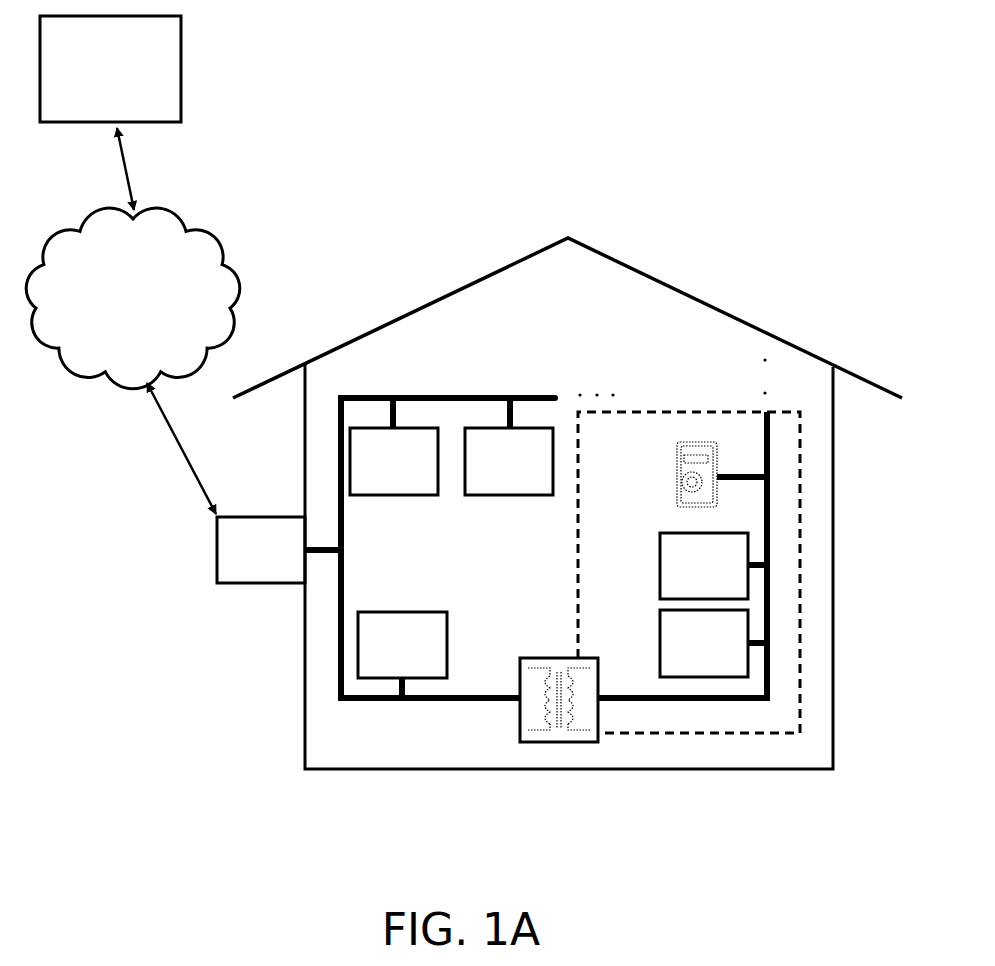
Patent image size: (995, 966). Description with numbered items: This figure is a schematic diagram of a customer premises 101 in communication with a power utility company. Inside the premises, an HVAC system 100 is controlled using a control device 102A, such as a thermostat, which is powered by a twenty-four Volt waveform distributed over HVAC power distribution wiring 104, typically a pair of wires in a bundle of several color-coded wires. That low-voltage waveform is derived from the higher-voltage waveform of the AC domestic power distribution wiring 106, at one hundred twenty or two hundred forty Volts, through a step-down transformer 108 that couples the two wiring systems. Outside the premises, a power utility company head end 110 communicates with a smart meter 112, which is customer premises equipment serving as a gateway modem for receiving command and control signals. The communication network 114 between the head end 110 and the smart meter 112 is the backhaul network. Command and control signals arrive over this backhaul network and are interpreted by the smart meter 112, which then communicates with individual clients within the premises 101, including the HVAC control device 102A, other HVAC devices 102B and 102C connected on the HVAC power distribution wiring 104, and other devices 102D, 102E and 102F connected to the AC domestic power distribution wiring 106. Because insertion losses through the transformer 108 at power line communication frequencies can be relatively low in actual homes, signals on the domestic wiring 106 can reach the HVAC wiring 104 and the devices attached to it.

The HVAC system 100 is at (800, 485).
The customer premises 101 is at (697, 300).
The control device 102A is at (683, 462).
The HVAC device 102B is at (672, 656).
The HVAC device 102C is at (672, 579).
The device 102D is at (369, 658).
The device 102E is at (362, 475).
The device 102F is at (478, 475).
The HVAC power distribution wiring 104 is at (636, 693).
The AC domestic power distribution wiring 106 is at (345, 592).
The step-down transformer 108 is at (540, 648).
The head end 110 is at (88, 97).
The smart meter 112 is at (238, 563).
The communication network 114 is at (110, 310).